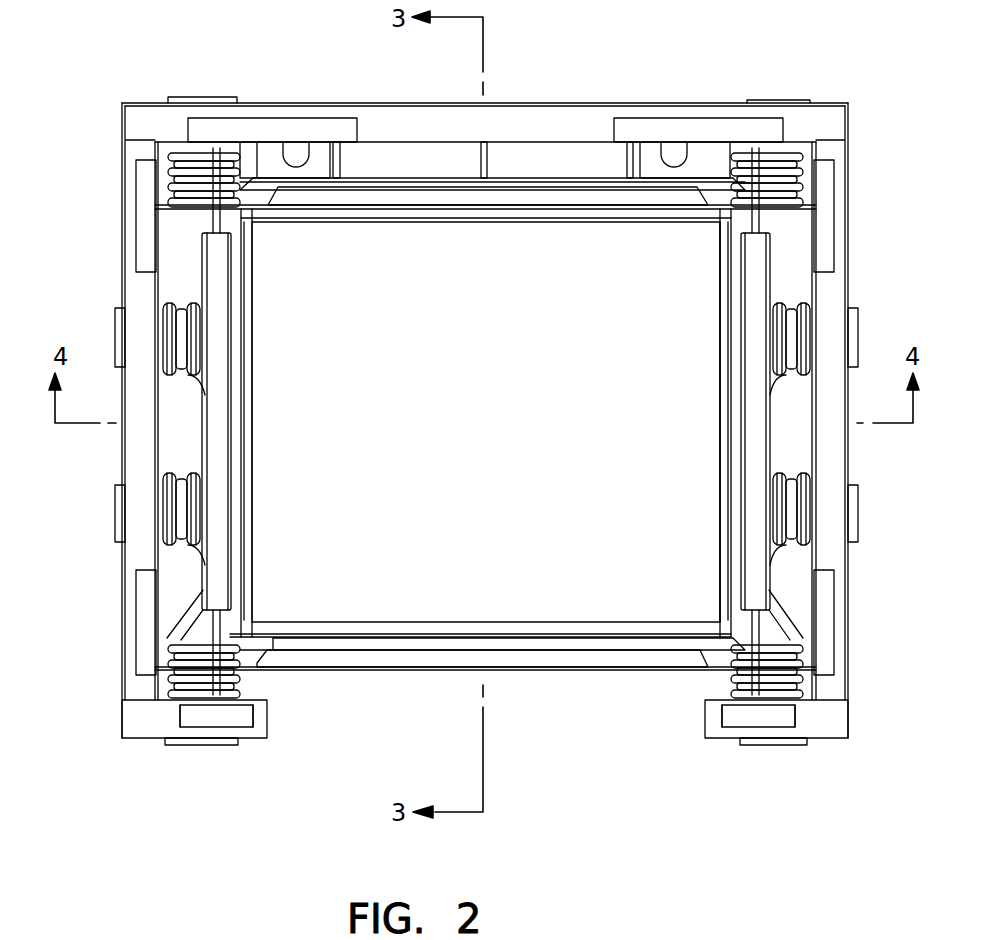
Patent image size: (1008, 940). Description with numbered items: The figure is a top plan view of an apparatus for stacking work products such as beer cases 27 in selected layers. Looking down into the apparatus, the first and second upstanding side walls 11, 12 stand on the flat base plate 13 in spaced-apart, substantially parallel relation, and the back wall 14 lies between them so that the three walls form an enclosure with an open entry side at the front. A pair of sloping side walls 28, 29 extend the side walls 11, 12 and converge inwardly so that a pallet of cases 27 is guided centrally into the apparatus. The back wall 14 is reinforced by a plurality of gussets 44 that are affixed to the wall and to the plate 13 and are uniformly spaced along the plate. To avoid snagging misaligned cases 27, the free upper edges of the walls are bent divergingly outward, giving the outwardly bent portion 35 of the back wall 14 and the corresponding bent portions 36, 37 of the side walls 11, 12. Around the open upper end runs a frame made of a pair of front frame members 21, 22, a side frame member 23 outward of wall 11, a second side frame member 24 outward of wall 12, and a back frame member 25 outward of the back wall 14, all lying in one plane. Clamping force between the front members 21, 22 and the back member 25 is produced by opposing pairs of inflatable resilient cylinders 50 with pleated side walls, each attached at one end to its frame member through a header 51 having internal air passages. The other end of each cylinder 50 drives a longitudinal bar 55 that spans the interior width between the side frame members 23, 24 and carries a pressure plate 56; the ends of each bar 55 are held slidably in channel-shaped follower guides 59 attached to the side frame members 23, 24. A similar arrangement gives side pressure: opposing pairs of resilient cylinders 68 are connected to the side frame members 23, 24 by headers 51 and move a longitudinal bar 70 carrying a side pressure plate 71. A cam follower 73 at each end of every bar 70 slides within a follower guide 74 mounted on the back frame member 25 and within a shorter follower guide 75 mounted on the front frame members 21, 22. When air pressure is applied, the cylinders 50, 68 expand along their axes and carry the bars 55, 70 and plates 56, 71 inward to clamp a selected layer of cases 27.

The first upstanding side wall 11 is at (248, 355).
The second upstanding side wall 12 is at (725, 355).
The flat base plate 13 is at (562, 165).
The back wall 14 is at (648, 200).
The front frame member 21 is at (238, 742).
The front frame member 22 is at (712, 722).
The side frame member 23 is at (135, 455).
The second side frame member 24 is at (838, 388).
The back frame member 25 is at (452, 125).
The beer cases 27 is at (405, 615).
The sloping side wall 28 is at (250, 562).
The sloping side wall 29 is at (735, 560).
The outwardly bent portion 35 is at (265, 175).
The bent portion 36 is at (248, 320).
The bent portion 37 is at (735, 325).
The gussets 44 is at (340, 178).
The resilient cylinders 50 is at (185, 175).
The header 51 is at (175, 312).
The longitudinal bar 55 is at (252, 203).
The pressure plate 56 is at (357, 203).
The follower guides 59 is at (145, 245).
The resilient cylinders 68 is at (200, 375).
The longitudinal bar 70 is at (222, 210).
The side pressure plate 71 is at (222, 500).
The cam follower 73 is at (312, 158).
The follower guide 74 is at (230, 128).
The follower guide 75 is at (240, 713).